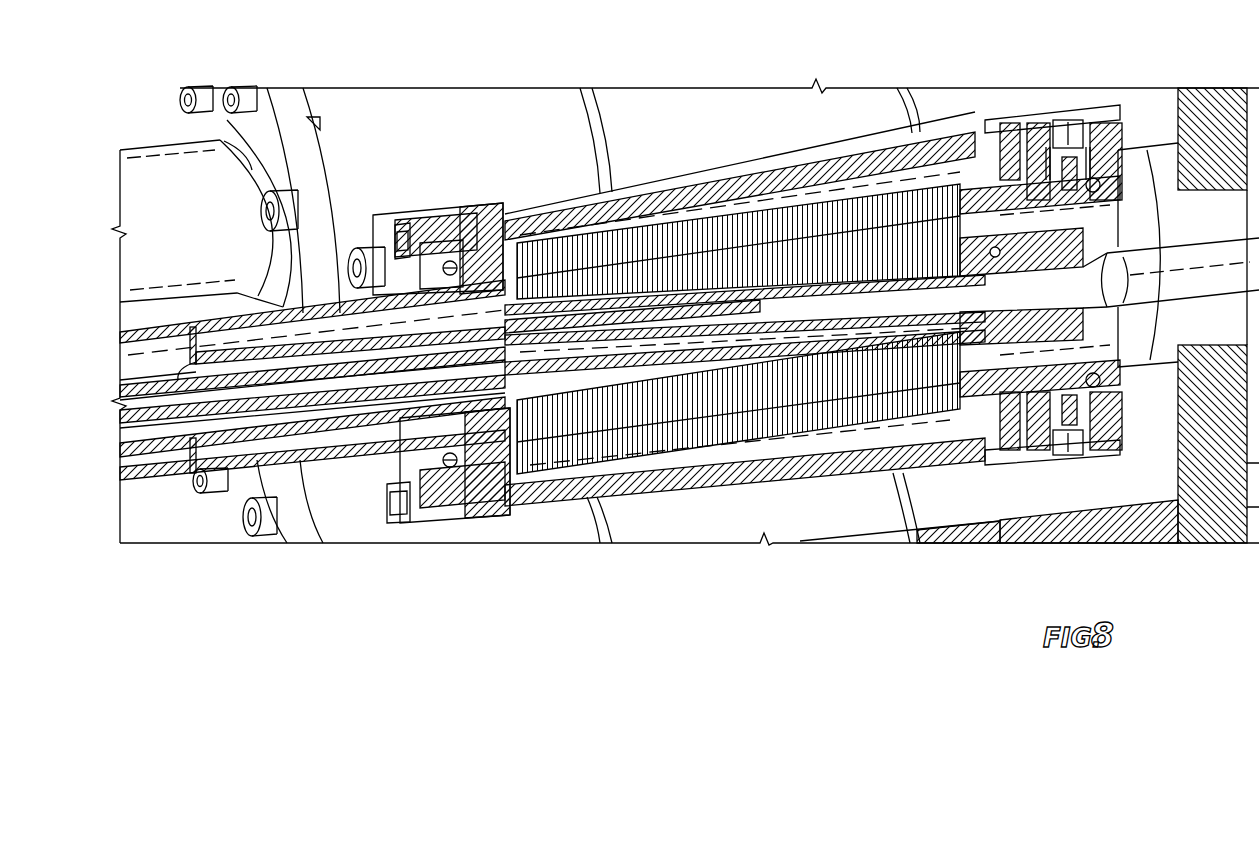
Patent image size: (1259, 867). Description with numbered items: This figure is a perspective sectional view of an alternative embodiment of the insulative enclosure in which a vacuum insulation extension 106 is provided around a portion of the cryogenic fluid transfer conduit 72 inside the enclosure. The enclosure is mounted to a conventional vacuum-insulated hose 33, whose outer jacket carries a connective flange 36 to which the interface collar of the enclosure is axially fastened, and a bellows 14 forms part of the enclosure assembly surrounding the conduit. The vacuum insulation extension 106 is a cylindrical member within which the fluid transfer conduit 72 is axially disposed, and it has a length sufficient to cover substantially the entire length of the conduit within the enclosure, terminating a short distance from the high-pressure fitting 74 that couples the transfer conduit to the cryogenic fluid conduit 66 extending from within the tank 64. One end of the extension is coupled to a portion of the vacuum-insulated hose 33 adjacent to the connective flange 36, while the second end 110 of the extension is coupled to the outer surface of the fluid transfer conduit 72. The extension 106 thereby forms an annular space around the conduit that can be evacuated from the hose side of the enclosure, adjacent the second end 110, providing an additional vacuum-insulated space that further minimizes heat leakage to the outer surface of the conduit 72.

The bellows 14 is at (793, 205).
The vacuum-insulated hose 33 is at (130, 338).
The connective flange 36 is at (432, 520).
The tank 64 is at (1217, 127).
The cryogenic fluid conduit 66 is at (1145, 267).
The cryogenic fluid transfer conduit 72 is at (604, 347).
The high-pressure fitting 74 is at (983, 257).
The vacuum insulation extension 106 is at (193, 445).
The second end 110 is at (737, 465).